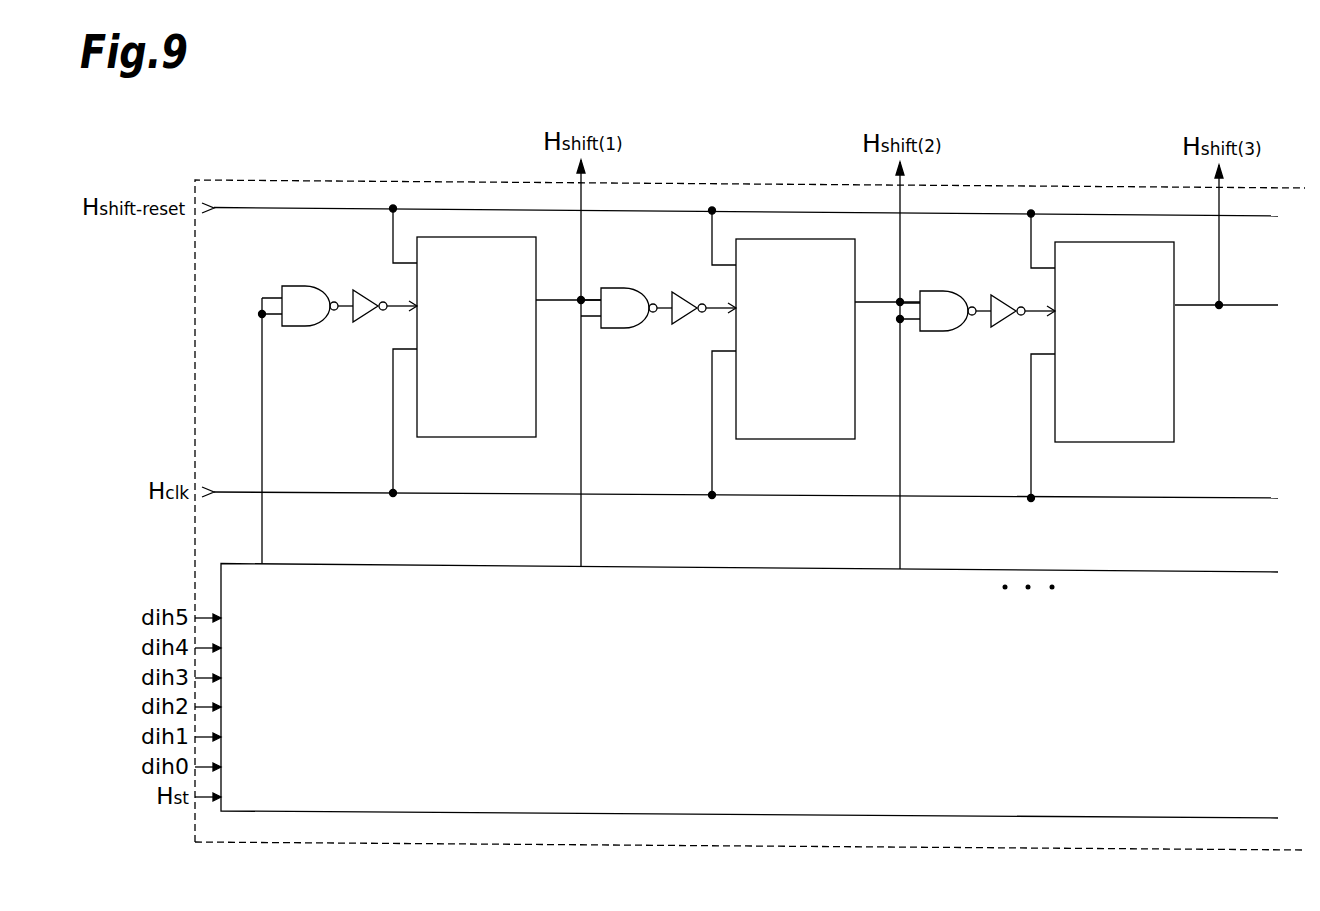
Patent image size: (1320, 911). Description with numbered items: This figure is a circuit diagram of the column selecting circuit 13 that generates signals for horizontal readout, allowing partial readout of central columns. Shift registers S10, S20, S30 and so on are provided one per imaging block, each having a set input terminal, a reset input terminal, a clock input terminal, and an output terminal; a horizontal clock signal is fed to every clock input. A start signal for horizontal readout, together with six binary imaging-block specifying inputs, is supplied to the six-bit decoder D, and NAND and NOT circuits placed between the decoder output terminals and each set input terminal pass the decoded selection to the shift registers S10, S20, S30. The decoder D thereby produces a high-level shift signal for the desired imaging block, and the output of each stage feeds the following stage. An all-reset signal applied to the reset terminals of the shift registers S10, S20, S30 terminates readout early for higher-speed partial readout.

The column selecting circuit 13 is at (303, 180).
The shift register S10 is at (477, 437).
The shift register S20 is at (796, 440).
The shift register S30 is at (1115, 443).
The 6-bit decoder D is at (1163, 572).